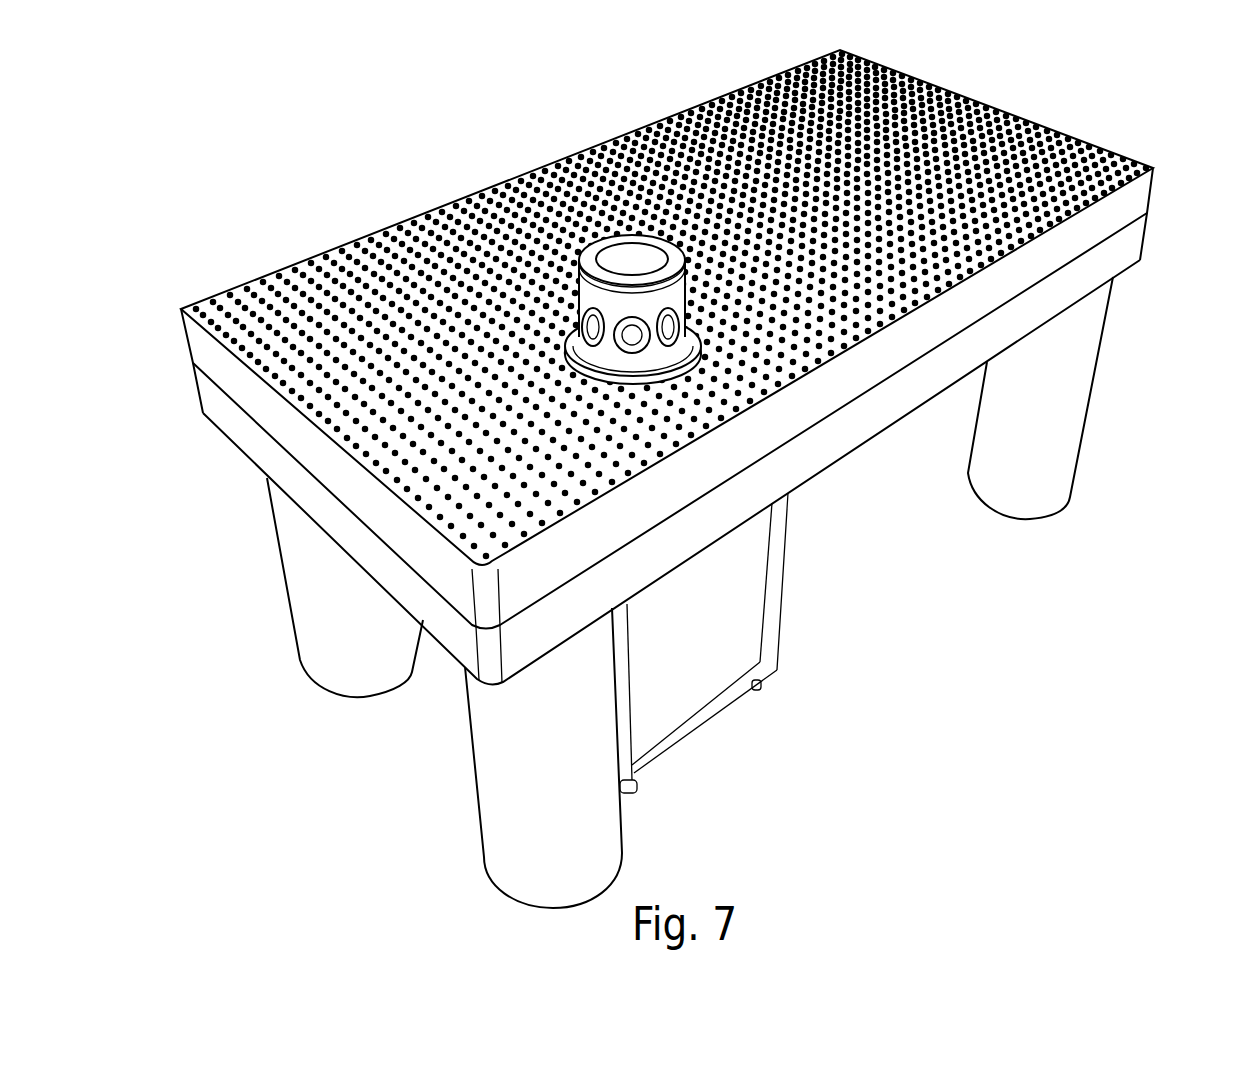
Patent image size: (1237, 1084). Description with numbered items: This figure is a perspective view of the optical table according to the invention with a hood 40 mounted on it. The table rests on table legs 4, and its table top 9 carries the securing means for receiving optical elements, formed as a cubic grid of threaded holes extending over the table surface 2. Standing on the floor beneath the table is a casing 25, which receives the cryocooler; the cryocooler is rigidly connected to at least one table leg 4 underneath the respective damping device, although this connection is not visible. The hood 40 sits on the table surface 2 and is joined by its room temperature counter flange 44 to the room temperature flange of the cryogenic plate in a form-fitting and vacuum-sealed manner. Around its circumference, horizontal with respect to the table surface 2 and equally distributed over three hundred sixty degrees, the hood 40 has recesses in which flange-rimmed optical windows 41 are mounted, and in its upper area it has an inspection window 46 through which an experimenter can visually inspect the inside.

The table surface 2 is at (1113, 167).
The table leg 4 is at (474, 782).
The table top 9 is at (1136, 200).
The casing 25 is at (778, 568).
The hood 40 is at (651, 306).
The optical windows 41 is at (584, 325).
The room temperature counter flange 44 is at (684, 368).
The inspection window 46 is at (638, 250).